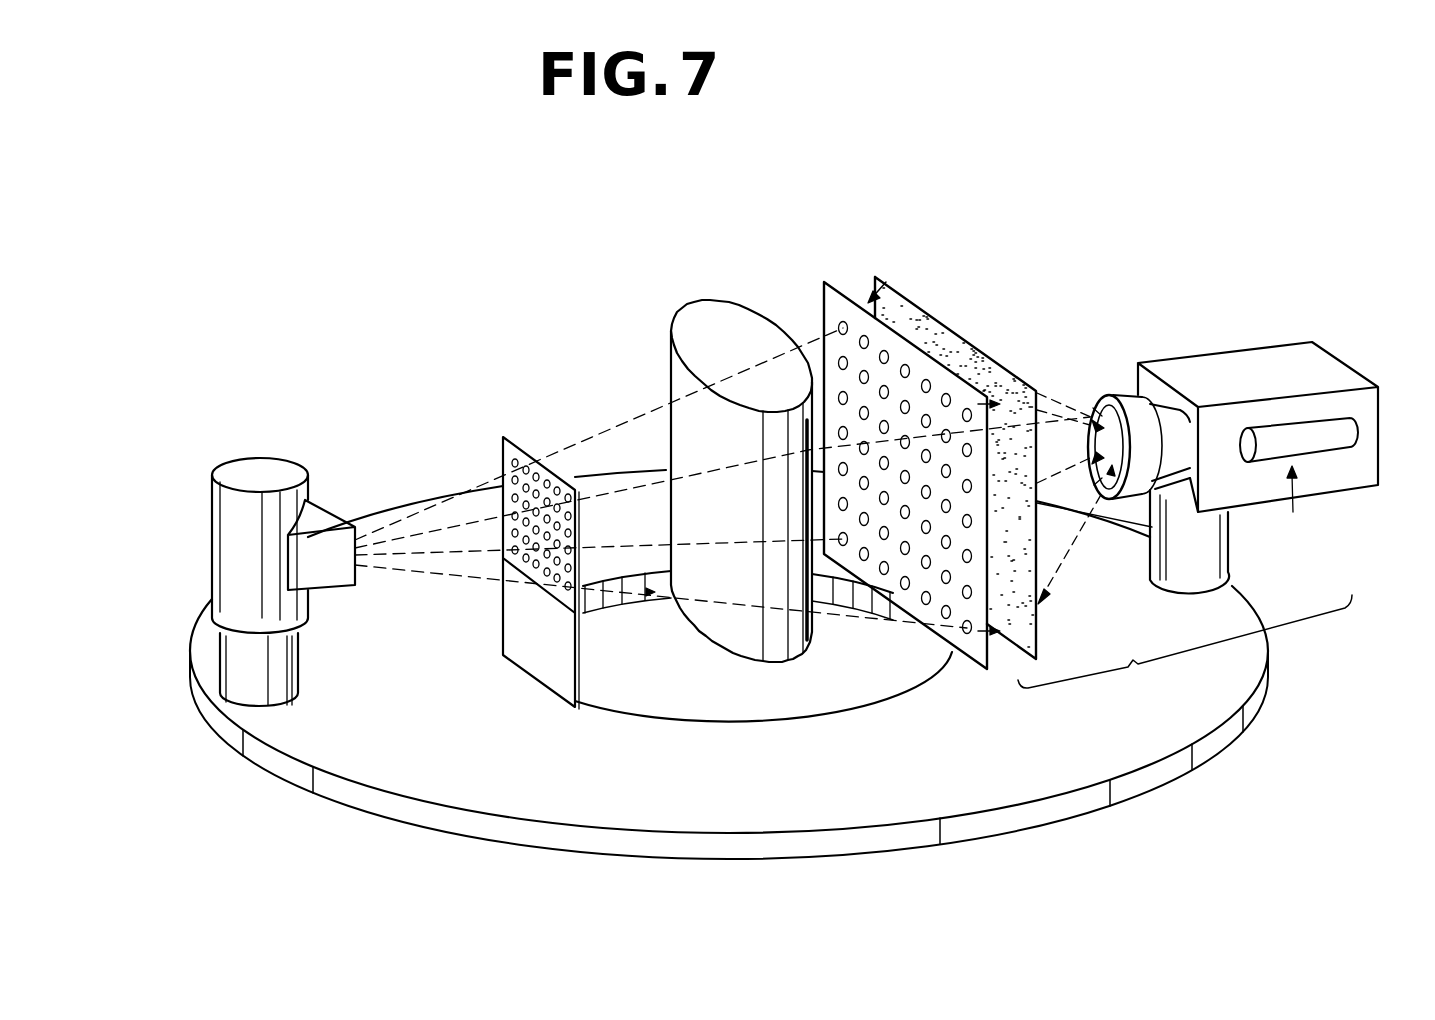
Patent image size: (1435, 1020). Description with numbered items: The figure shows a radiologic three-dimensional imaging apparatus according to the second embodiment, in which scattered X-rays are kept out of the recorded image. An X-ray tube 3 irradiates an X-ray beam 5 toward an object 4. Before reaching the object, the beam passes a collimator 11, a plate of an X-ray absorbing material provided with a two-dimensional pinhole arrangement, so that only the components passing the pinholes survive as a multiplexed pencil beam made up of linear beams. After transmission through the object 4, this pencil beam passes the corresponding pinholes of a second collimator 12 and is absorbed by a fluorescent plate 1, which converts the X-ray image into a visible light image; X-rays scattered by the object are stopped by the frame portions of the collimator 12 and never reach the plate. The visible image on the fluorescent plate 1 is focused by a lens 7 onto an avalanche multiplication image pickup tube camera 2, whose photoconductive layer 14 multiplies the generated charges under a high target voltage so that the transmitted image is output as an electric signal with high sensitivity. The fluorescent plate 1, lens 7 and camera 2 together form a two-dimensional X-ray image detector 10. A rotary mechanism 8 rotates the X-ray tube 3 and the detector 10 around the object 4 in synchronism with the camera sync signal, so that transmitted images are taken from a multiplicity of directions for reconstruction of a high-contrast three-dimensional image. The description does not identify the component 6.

The fluorescent plate 1 is at (874, 282).
The avalanche multiplication image pickup tube camera 2 is at (1207, 357).
The X-ray tube 3 is at (272, 458).
The object 4 is at (705, 292).
The X-ray beam 5 is at (600, 430).
The light path to camera 6 is at (1047, 392).
The lens 7 is at (1118, 392).
The rotary mechanism 8 is at (322, 790).
The two-dimensional X-ray image detector 10 is at (1128, 696).
The collimator 11 is at (503, 457).
The collimator 12 is at (822, 282).
The photoconductive layer 14 is at (1250, 422).